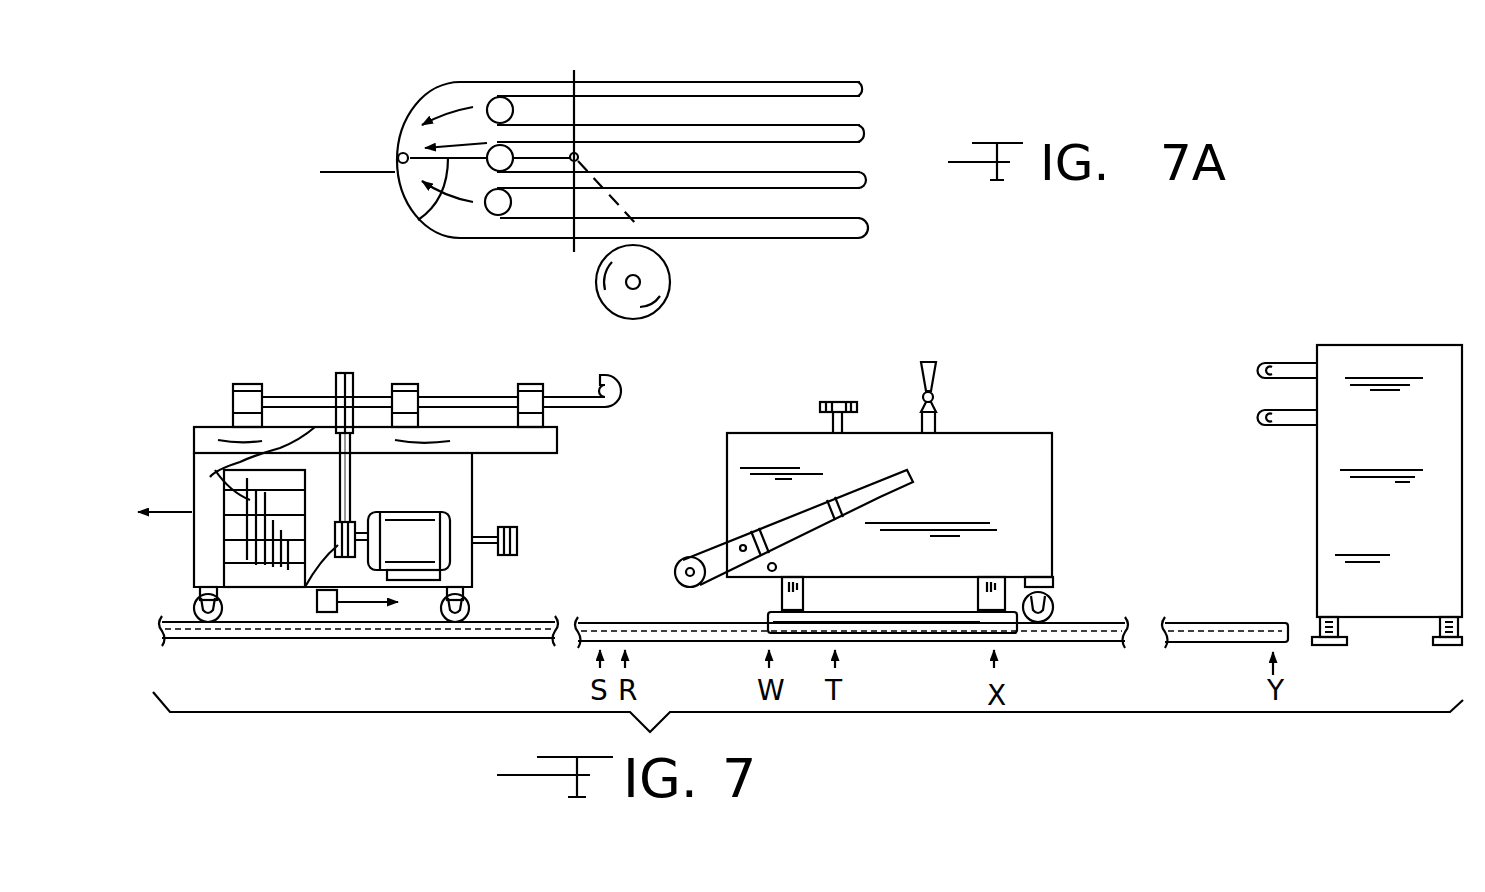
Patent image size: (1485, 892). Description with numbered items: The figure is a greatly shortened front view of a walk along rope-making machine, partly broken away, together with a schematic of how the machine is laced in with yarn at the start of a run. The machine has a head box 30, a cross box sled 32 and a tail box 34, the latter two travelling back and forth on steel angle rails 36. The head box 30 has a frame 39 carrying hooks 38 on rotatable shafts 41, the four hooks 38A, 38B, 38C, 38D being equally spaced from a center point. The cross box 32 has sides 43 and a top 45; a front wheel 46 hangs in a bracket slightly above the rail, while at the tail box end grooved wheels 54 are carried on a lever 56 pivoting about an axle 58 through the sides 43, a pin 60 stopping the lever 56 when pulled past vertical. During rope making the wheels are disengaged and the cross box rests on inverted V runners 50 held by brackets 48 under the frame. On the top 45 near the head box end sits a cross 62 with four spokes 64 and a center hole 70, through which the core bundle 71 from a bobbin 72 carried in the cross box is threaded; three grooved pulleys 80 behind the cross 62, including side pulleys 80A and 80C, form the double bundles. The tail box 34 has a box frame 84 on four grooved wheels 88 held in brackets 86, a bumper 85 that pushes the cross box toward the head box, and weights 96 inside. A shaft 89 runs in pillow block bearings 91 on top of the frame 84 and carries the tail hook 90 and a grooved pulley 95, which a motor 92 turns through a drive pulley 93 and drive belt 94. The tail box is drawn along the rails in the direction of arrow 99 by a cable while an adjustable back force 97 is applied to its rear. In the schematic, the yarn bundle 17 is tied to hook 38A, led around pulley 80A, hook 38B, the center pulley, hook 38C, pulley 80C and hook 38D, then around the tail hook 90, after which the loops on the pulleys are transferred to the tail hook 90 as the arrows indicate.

In FIG. 7A, the bundle 17 is at (743, 95).
In FIG. 7, the head box 30 is at (1376, 340).
In FIG. 7, the cross box sled 32 is at (1060, 478).
In FIG. 7, the tail box 34 is at (572, 440).
In FIG. 7, the rails 36 is at (434, 636).
In FIG. 7, the hooks 38 is at (1257, 410).
In FIG. 7A, the upper left hook 38A is at (877, 102).
In FIG. 7A, the lower left hook 38B is at (873, 140).
In FIG. 7A, the lower right hand hook 38C is at (900, 186).
In FIG. 7A, the upper right hand hook 38D is at (900, 232).
In FIG. 7, the frame 39 is at (1333, 515).
In FIG. 7, the rotatable shafts 41 is at (1290, 365).
In FIG. 7, the sides 43 is at (1022, 510).
In FIG. 7, the top 45 is at (960, 433).
In FIG. 7, the wheel 46 is at (1053, 600).
In FIG. 7, the brackets 48 is at (805, 594).
In FIG. 7, the runner 50 is at (997, 625).
In FIG. 7, the wheels 54 is at (678, 560).
In FIG. 7, the lever 56 is at (850, 507).
In FIG. 7, the axle 58 is at (746, 532).
In FIG. 7, the pin 60 is at (768, 574).
In FIG. 7A, the cross 62 is at (577, 138).
In FIG. 7, the cross 62 is at (940, 363).
In FIG. 7, the spokes 64 is at (935, 370).
In FIG. 7, the hole 70 is at (920, 397).
In FIG. 7A, the core bundle 71 is at (422, 212).
In FIG. 7A, the bobbin 72 is at (670, 303).
In FIG. 7, the grooved pulleys 80 is at (830, 400).
In FIG. 7A, the pulley 80A is at (500, 97).
In FIG. 7A, the pulley 80C is at (487, 218).
In FIG. 7, the box frame 84 is at (205, 453).
In FIG. 7, the bumper 85 is at (517, 535).
In FIG. 7, the bracket 86 is at (197, 596).
In FIG. 7, the wheels 88 is at (212, 623).
In FIG. 7, the shaft 89 is at (468, 395).
In FIG. 7A, the tail hook 90 is at (353, 173).
In FIG. 7, the tail hook 90 is at (627, 386).
In FIG. 7, the pillow block bearings 91 is at (248, 384).
In FIG. 7, the motor 92 is at (430, 553).
In FIG. 7, the drive pulley 93 is at (312, 585).
In FIG. 7, the drive belt 94 is at (350, 478).
In FIG. 7, the grooved pulley 95 is at (337, 373).
In FIG. 7, the weights 96 is at (237, 553).
In FIG. 7, the drag or back force 97 is at (172, 508).
In FIG. 7, the arrow 99 is at (358, 608).